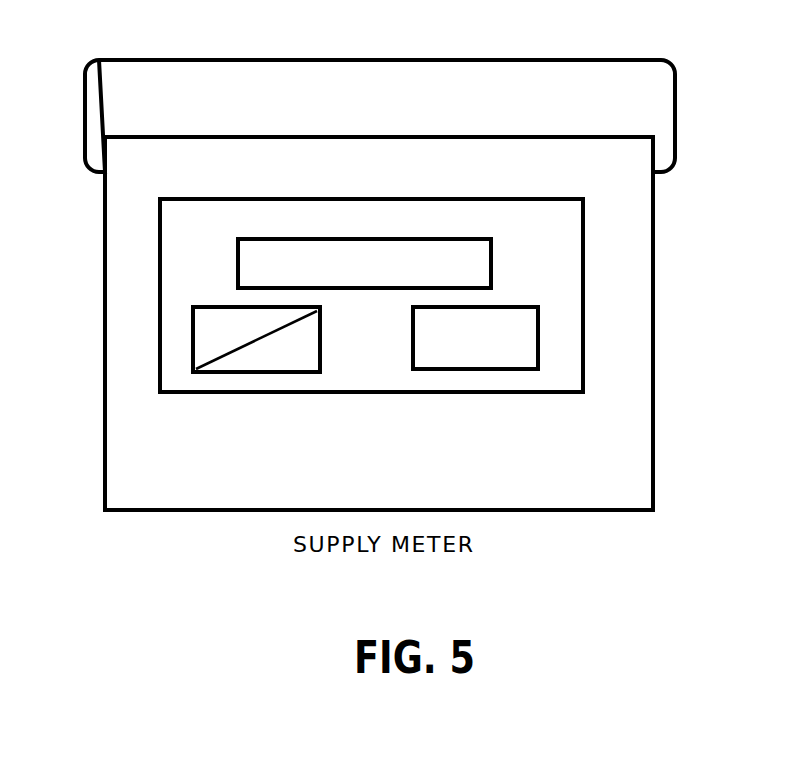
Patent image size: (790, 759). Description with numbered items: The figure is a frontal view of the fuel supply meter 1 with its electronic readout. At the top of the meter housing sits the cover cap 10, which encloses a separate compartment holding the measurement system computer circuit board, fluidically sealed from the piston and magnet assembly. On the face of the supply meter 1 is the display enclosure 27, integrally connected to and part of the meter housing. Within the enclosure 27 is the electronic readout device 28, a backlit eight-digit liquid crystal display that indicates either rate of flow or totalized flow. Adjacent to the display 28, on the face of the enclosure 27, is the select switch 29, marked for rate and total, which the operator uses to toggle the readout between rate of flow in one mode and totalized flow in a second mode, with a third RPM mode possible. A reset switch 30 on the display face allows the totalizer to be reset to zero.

The cover cap 10 is at (298, 60).
The fuel supply meter 1 is at (391, 467).
The display enclosure 27 is at (160, 278).
The electronic readout device 28 is at (491, 271).
The select switch 29 is at (194, 347).
The reset switch 30 is at (538, 355).